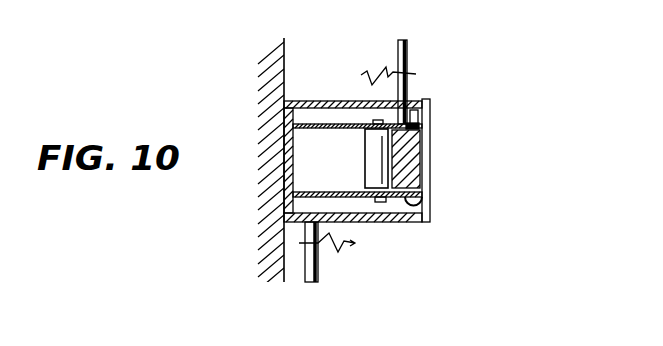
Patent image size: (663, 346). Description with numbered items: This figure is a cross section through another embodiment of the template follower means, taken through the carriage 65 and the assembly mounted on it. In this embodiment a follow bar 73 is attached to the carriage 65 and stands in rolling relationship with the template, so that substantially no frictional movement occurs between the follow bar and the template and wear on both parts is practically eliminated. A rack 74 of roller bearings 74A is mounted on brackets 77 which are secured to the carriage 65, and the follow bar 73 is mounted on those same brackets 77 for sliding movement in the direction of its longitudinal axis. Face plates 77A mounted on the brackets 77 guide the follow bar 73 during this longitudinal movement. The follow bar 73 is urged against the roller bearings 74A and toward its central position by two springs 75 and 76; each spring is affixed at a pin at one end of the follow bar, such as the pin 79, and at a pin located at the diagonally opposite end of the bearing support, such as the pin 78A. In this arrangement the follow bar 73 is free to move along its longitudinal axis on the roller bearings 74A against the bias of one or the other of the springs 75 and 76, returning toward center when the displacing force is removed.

The carriage 65 is at (275, 260).
The follow bar 73 is at (410, 168).
The rack 74 is at (424, 127).
The roller bearings 74A is at (378, 165).
The spring 75 is at (372, 66).
The spring 76 is at (338, 252).
The brackets 77 is at (413, 102).
The face plates 77A is at (430, 149).
The pin 78A is at (319, 276).
The pin 79 is at (407, 53).